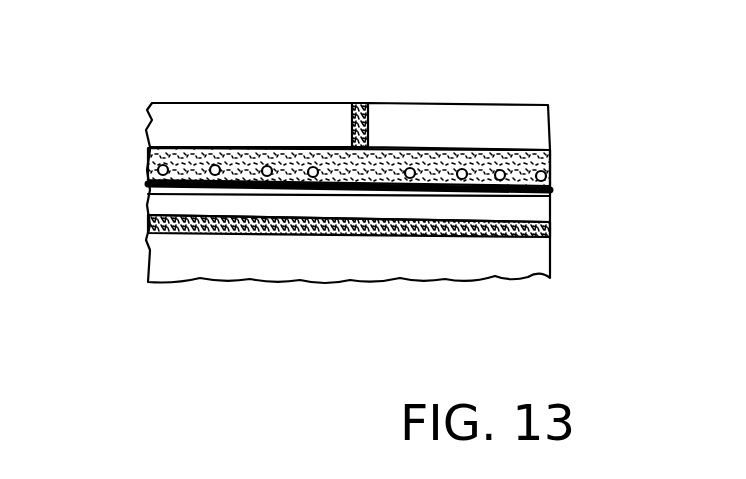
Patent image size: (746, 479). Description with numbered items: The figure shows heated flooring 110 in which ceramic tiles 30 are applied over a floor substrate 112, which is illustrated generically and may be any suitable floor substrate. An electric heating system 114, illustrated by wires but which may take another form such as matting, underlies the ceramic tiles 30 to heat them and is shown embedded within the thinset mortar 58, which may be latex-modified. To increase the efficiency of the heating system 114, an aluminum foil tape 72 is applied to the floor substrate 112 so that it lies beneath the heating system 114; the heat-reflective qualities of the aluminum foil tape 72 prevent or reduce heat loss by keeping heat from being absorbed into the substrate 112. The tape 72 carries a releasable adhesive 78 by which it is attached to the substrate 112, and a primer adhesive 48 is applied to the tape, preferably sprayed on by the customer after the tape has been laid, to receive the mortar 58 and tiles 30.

The heated flooring 110 is at (538, 75).
The floor substrate 112 is at (357, 267).
The ceramic tiles 30 is at (275, 136).
The thinset mortar 58 is at (548, 160).
The heating system 114 is at (158, 166).
The primer adhesive 48 is at (147, 185).
The aluminum foil tape 72 is at (548, 205).
The releasable adhesive 78 is at (548, 227).